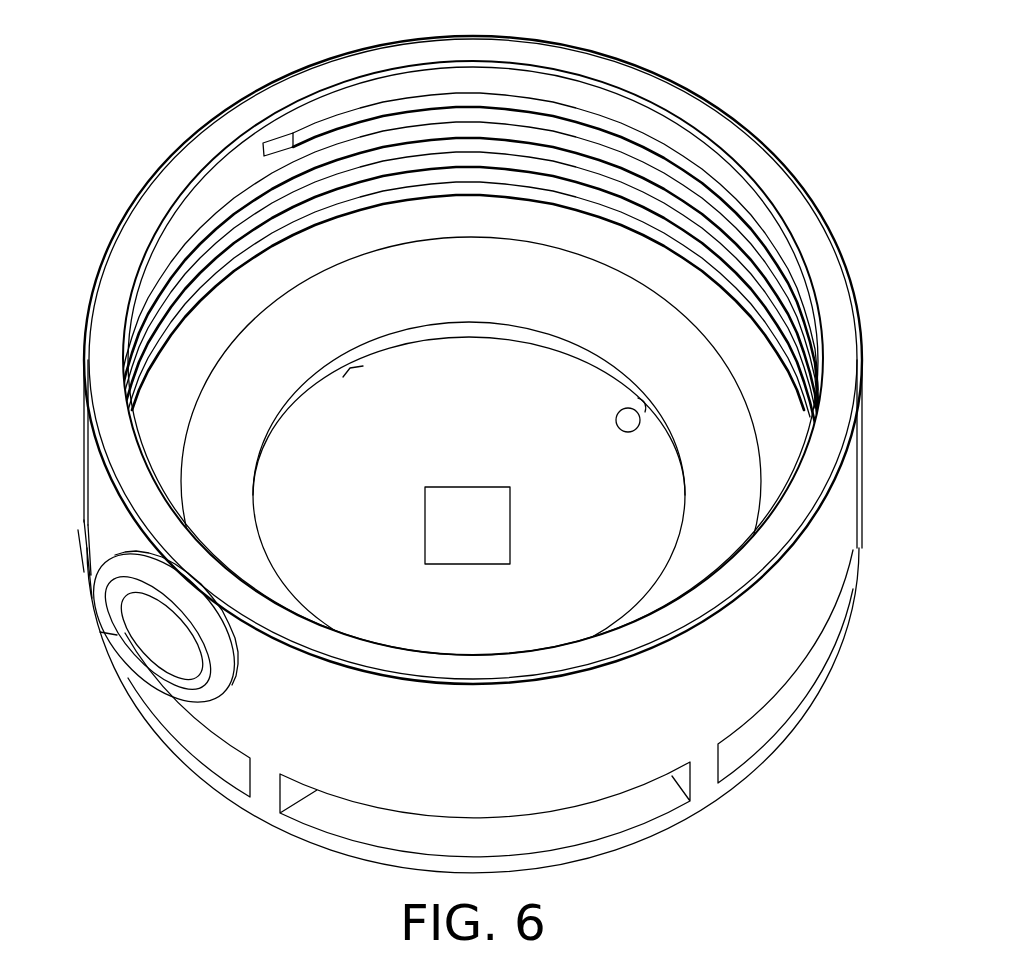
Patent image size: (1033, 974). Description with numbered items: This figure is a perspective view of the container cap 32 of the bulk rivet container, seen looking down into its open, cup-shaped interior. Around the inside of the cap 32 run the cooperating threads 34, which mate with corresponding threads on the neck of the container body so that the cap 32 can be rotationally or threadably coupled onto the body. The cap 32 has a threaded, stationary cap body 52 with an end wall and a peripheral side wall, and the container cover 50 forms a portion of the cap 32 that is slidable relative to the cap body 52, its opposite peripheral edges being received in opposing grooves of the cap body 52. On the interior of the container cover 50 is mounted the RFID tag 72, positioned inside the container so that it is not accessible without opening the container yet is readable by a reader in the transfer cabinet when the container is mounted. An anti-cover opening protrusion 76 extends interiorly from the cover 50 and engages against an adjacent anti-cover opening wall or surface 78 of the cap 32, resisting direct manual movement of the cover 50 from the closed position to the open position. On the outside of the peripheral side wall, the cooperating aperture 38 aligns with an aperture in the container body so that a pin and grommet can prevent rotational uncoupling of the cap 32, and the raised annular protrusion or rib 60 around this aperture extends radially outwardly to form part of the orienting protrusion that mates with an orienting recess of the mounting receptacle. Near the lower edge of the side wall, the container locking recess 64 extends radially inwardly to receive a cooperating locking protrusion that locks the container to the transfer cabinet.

The container cap 32 is at (870, 448).
The cooperating threads 34 is at (602, 153).
The cooperating aperture 38 is at (166, 627).
The container cover 50 is at (303, 440).
The cap body 52 is at (838, 505).
The raised annular protrusion or rib 60 is at (113, 577).
The container locking recess 64 is at (630, 812).
The RFID tag 72 is at (468, 497).
The anti-cover opening protrusion 76 is at (618, 426).
The anti-cover opening wall or surface 78 is at (643, 410).